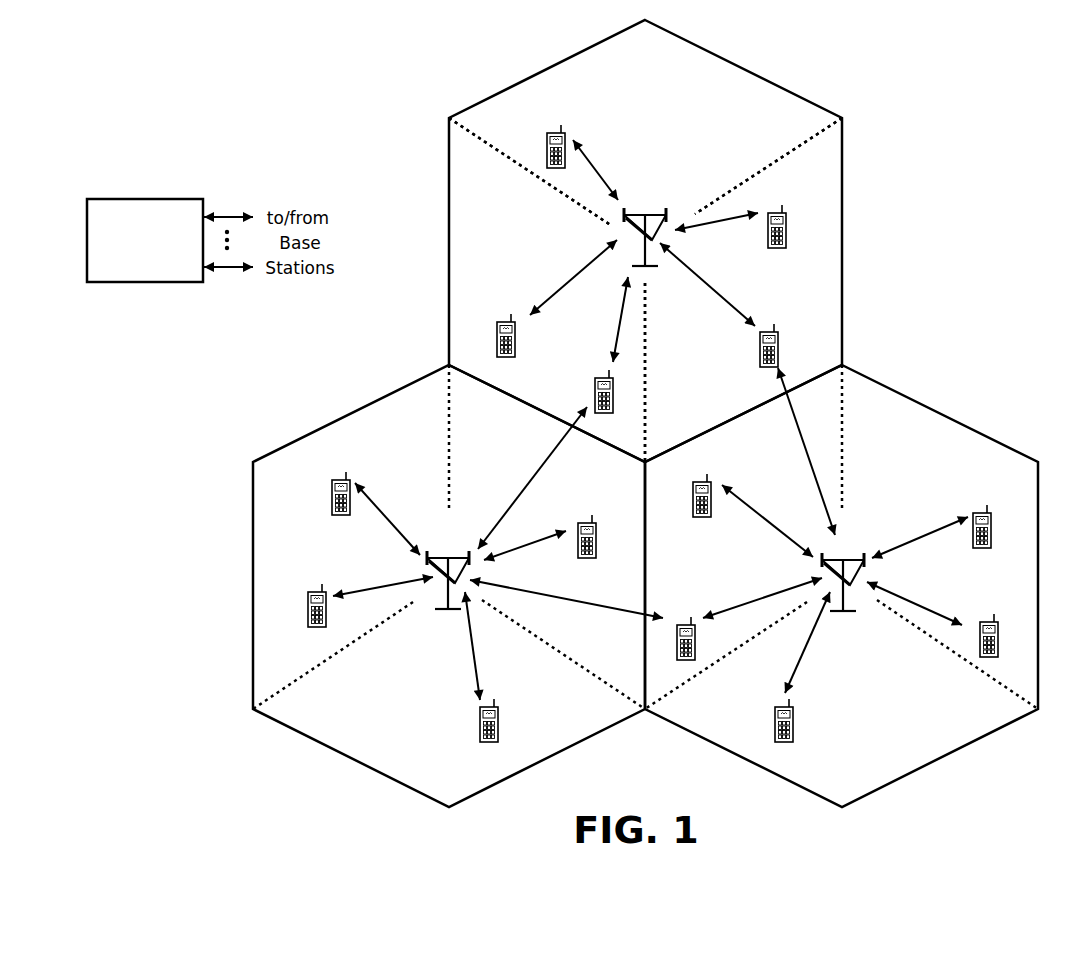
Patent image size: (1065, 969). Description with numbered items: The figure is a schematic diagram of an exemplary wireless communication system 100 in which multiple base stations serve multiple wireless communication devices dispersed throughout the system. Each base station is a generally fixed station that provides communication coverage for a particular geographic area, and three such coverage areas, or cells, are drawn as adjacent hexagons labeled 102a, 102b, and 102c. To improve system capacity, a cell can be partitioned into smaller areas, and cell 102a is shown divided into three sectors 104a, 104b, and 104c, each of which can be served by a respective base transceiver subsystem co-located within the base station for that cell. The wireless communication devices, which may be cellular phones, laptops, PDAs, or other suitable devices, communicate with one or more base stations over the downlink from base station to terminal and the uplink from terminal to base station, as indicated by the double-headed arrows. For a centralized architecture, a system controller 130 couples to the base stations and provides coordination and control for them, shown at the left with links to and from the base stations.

The wireless communication system 100 is at (979, 83).
The cell 102a is at (746, 69).
The cell 102b is at (350, 413).
The cell 102c is at (932, 412).
The sector 104a is at (623, 75).
The sector 104b is at (459, 215).
The sector 104c is at (690, 403).
The system controller 130 is at (140, 198).